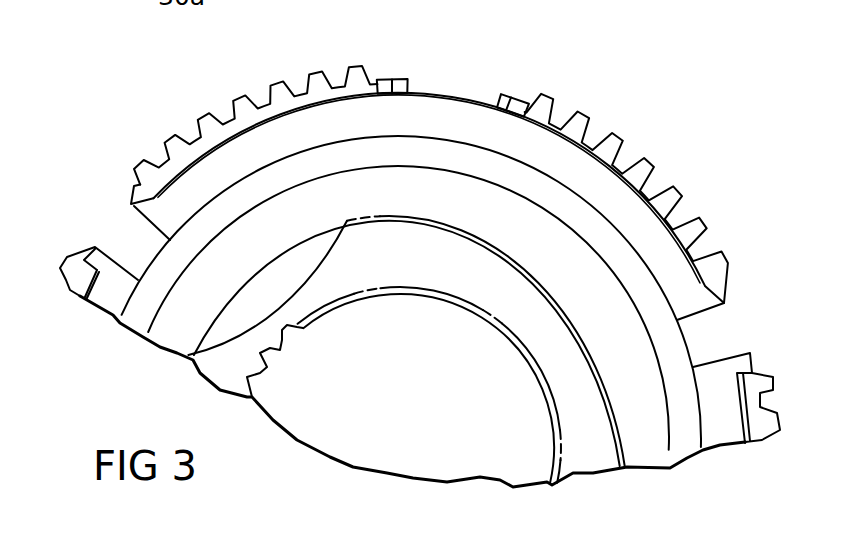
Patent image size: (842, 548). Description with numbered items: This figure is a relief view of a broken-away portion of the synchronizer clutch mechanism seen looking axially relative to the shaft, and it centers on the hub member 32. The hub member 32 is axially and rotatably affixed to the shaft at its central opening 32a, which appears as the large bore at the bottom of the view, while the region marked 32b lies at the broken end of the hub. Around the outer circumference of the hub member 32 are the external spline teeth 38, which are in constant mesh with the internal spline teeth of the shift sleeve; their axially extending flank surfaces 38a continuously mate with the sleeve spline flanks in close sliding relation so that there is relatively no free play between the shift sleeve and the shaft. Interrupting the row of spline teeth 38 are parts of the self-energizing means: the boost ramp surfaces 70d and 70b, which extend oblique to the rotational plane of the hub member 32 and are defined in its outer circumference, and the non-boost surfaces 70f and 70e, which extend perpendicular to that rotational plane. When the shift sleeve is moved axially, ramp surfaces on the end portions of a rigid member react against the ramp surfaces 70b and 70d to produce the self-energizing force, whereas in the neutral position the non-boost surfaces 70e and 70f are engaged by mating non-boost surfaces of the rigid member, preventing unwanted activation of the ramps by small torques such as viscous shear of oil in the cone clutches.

The hub member 32 is at (343, 212).
The central opening 32a is at (283, 340).
The rim end face 32b is at (130, 211).
The external spline teeth 38 is at (647, 172).
The flank surfaces 38a is at (676, 212).
The self-energizing ramp surface 70b is at (518, 110).
The self-energizing ramp surface 70d is at (393, 81).
The non-boost surface 70e is at (494, 98).
The non-boost surface 70f is at (409, 89).